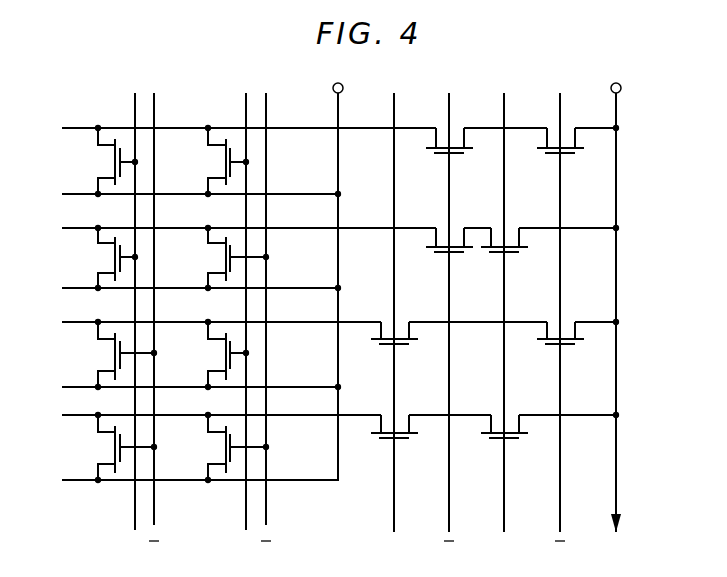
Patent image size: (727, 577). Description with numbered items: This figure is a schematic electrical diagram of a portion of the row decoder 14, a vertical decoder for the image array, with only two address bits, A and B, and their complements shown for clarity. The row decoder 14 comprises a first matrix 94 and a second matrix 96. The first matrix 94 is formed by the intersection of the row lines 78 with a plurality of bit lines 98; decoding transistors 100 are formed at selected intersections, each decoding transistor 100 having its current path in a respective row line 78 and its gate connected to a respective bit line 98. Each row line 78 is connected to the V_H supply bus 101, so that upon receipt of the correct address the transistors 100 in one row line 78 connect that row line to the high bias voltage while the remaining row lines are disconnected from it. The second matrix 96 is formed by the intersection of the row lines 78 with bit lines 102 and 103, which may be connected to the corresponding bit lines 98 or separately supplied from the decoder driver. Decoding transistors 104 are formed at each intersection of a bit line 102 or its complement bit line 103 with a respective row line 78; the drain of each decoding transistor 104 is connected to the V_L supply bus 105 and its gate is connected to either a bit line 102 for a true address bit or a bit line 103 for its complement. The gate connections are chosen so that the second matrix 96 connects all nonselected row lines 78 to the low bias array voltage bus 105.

The row decoder 14 is at (213, 60).
The second matrix 96 is at (162, 82).
The first matrix 94 is at (533, 82).
The row line 78 is at (68, 128).
The decoding transistor 104 is at (107, 162).
The V_L supply bus 105 is at (340, 172).
The decoding transistor 100 is at (458, 128).
The V_H supply bus 101 is at (618, 259).
The bit line 102 is at (136, 502).
The bit line 103 is at (154, 522).
The bit line 98 is at (560, 503).